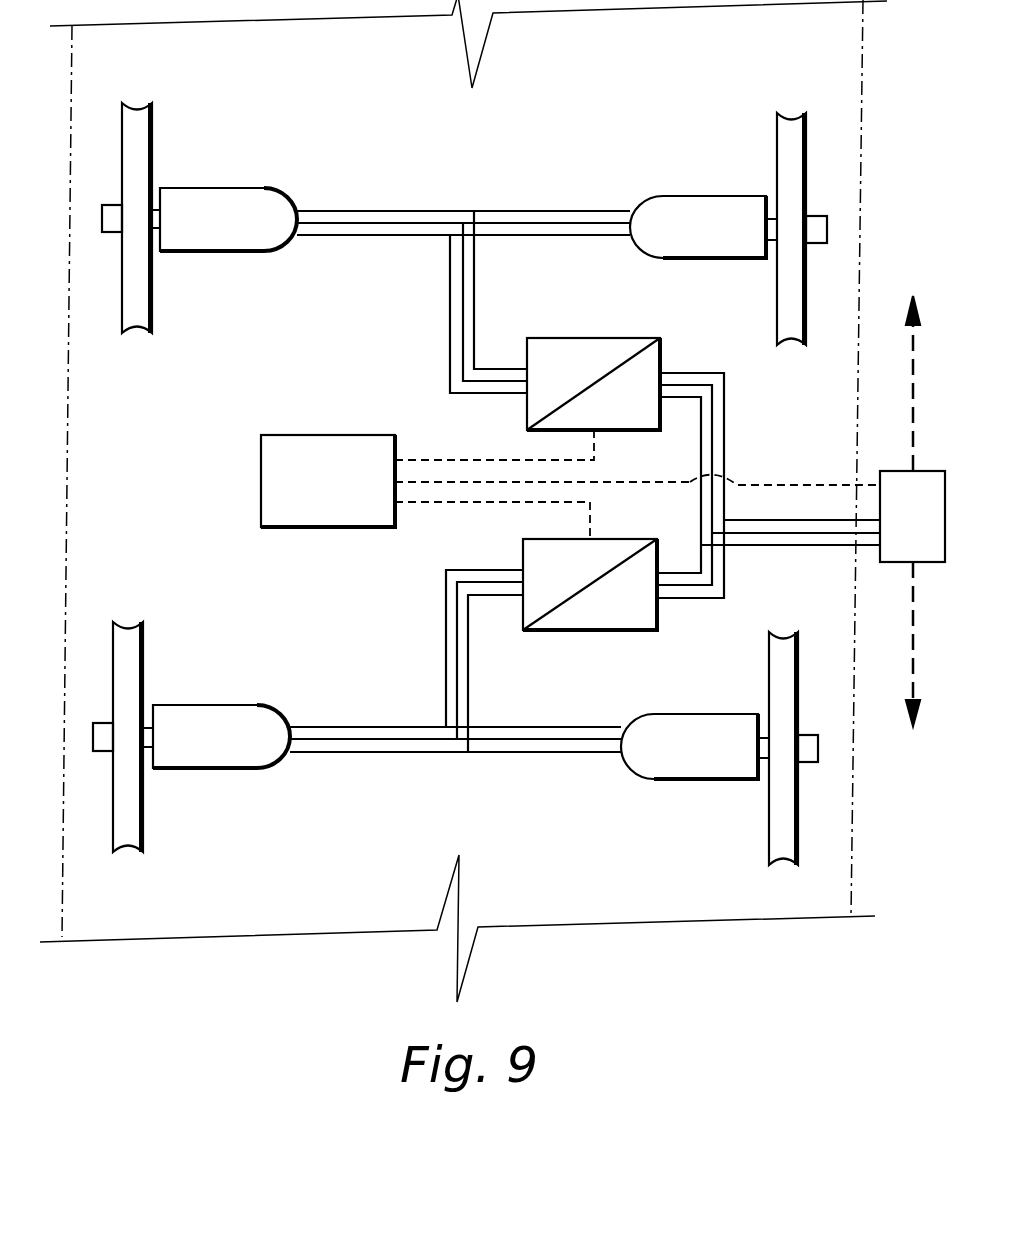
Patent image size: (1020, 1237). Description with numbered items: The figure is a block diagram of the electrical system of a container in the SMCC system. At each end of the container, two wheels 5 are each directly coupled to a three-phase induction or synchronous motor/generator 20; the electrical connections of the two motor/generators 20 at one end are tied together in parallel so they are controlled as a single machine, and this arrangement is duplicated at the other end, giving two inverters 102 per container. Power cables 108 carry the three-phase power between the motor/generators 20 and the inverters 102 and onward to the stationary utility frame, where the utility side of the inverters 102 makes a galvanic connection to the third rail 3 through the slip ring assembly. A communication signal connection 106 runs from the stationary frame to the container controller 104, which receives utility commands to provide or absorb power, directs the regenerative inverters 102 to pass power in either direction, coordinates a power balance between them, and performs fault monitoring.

The third rail 3 is at (823, 511).
The wheels 5 is at (150, 103).
The motor/generators 20 is at (230, 188).
The inverter 102 is at (577, 338).
The container controller 104 is at (320, 435).
The signal connection 106 is at (790, 484).
The power cable 108 is at (473, 308).